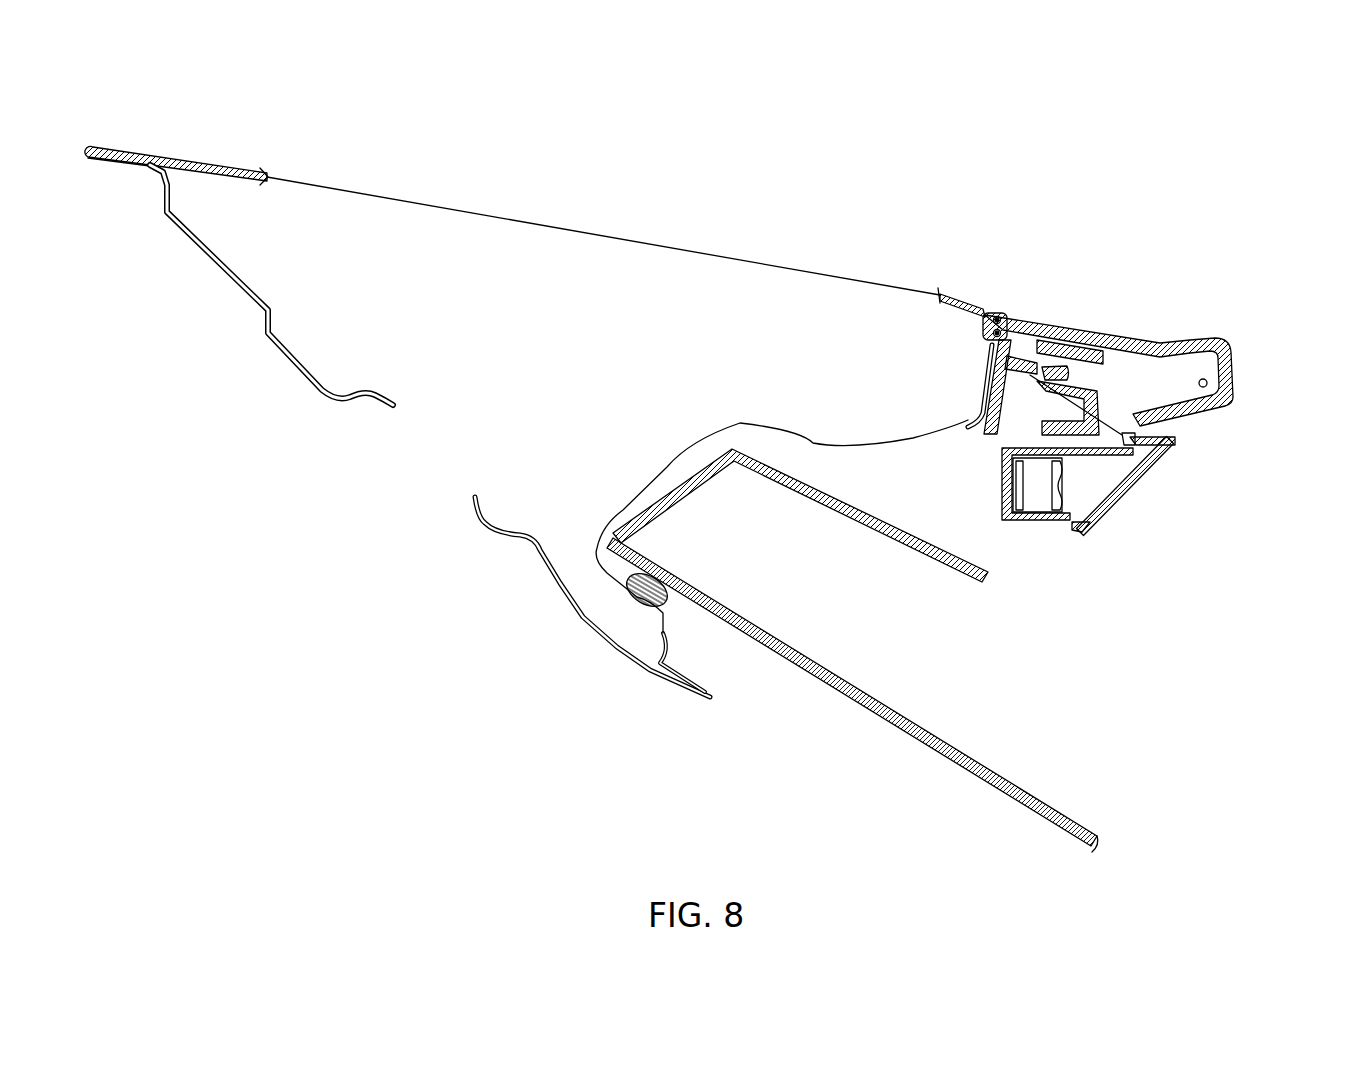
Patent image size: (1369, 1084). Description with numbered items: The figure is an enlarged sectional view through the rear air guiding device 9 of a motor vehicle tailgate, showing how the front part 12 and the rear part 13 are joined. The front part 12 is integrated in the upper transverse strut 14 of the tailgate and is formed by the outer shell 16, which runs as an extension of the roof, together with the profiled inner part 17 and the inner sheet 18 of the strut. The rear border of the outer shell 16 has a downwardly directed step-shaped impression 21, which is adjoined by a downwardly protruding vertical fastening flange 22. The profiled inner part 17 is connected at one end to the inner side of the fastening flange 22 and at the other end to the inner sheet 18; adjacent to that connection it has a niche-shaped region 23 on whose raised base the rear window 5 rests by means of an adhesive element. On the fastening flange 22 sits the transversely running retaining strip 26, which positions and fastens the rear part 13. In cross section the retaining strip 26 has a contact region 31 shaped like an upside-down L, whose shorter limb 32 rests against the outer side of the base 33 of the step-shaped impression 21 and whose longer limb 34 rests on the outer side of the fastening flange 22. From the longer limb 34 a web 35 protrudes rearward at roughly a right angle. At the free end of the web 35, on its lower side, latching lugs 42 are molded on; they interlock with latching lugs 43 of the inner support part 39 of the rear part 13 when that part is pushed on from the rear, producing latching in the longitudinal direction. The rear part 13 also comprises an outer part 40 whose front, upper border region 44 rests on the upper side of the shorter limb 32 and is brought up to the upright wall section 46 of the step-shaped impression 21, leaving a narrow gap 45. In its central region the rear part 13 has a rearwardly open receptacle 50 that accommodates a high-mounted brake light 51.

The rear window 5 is at (928, 743).
The rear air guiding device 9 is at (1244, 379).
The front part 12 is at (537, 212).
The rear part 13 is at (1109, 324).
The upper transverse strut 14 is at (528, 351).
The outer shell 16 is at (205, 170).
The profiled inner part 17 is at (913, 438).
The inner sheet 18 is at (308, 388).
The step-shaped impression 21 is at (984, 336).
The fastening flange 22 is at (988, 402).
The niche-shaped region 23 is at (800, 515).
The retaining strip 26 is at (1078, 372).
The contact region 31 is at (985, 378).
The shorter limb 32 is at (1003, 331).
The base 33 is at (990, 340).
The longer limb 34 is at (988, 415).
The web 35 is at (1038, 364).
The inner support part 39 is at (1098, 402).
The outer part 40 is at (1197, 408).
The latching lugs 42 is at (1062, 373).
The latching lugs 43 is at (1136, 445).
The front, upper border region 44 is at (995, 321).
The narrow gap 45 is at (990, 317).
The upright wall section 46 is at (983, 314).
The receptacle 50 is at (1008, 545).
The high-mounted brake light 51 is at (1123, 509).